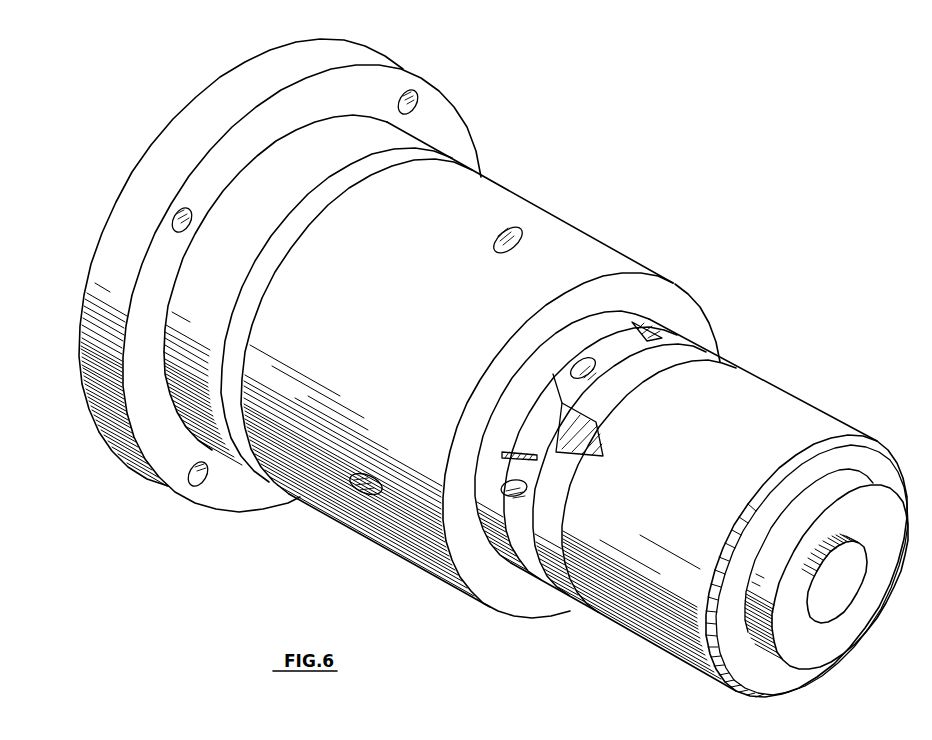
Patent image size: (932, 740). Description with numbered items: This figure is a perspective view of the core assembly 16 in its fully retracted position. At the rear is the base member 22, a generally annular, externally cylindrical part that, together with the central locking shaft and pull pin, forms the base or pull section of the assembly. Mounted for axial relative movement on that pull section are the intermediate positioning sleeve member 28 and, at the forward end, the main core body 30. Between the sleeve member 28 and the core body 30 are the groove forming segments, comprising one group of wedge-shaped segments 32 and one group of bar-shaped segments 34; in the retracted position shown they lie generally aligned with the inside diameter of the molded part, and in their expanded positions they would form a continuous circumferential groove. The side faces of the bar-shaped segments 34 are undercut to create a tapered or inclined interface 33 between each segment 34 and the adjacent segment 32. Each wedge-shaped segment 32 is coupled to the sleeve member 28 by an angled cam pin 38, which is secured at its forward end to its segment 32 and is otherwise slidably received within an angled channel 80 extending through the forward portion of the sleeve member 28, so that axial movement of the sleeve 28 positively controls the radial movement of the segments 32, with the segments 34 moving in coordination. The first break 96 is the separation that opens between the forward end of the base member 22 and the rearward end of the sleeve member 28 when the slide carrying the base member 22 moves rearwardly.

The core assembly 16 is at (631, 200).
The base member 22 is at (234, 488).
The positioning sleeve member 28 is at (557, 242).
The core body 30 is at (758, 426).
The wedge-shaped segments 32 is at (628, 368).
The inclined interface 33 is at (580, 376).
The bar-shaped segments 34 is at (548, 395).
The angled cam pins 38 is at (587, 371).
The angled channel 80 is at (507, 249).
The first break 96 is at (300, 232).